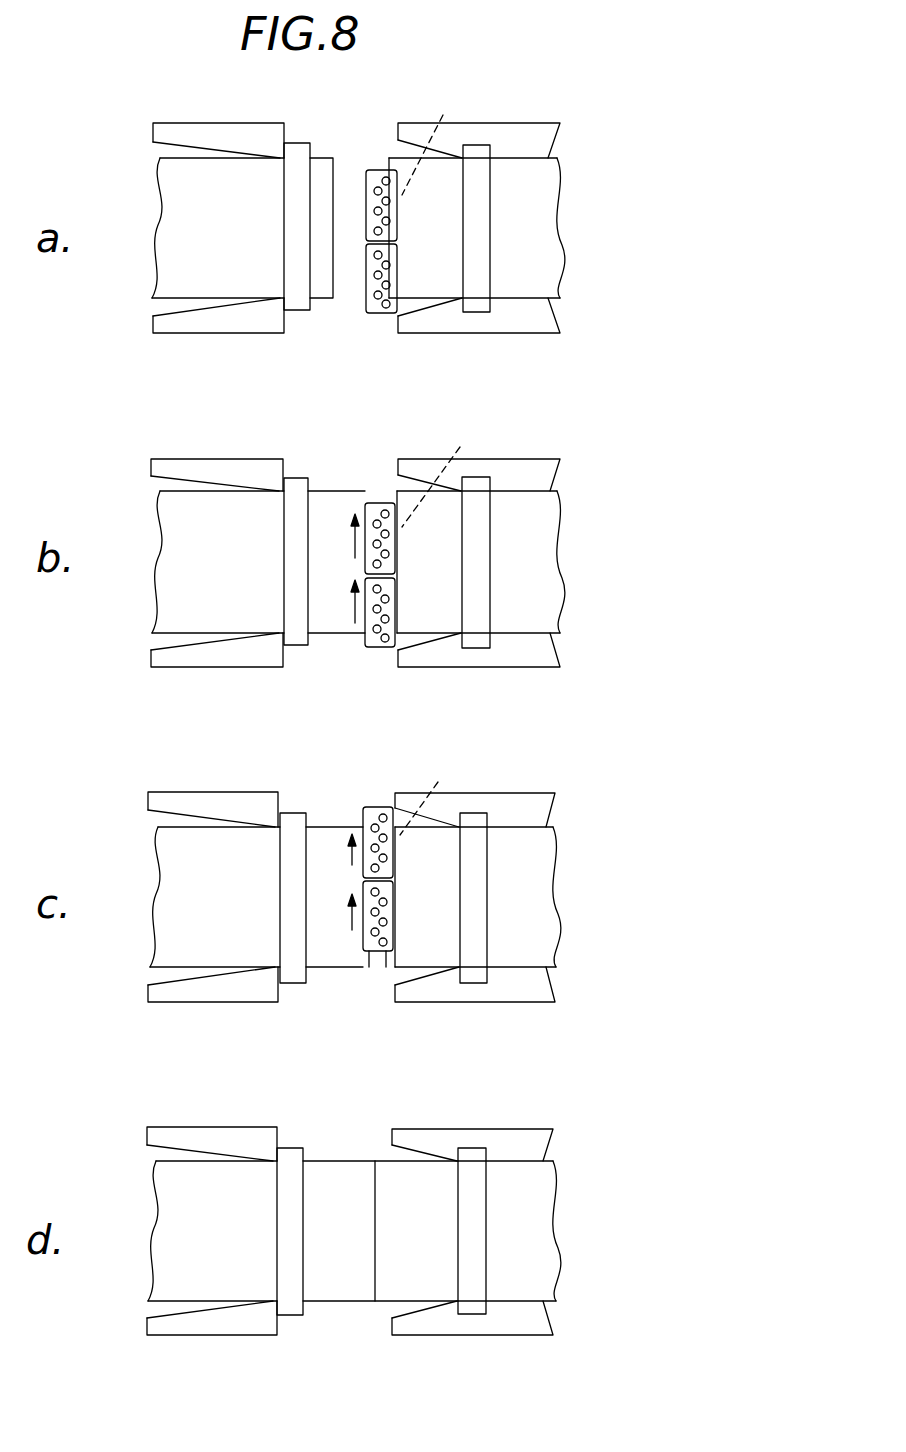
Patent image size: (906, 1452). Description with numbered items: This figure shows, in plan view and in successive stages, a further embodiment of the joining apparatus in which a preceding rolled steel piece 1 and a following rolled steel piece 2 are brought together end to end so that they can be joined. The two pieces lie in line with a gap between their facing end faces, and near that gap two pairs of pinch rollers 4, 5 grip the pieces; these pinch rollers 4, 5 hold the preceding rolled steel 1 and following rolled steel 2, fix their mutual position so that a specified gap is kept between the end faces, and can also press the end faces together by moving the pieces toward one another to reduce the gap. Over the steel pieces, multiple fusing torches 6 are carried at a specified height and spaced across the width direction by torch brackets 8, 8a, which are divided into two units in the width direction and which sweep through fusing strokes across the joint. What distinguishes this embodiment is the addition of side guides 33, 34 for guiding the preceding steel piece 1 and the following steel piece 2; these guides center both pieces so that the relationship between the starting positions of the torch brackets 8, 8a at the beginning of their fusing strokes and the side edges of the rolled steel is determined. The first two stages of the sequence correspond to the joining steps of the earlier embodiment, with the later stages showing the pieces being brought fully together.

The preceding rolled steel piece 1 is at (555, 178).
The following rolled steel piece 2 is at (165, 185).
The pinch rollers 4 is at (298, 157).
The pinch rollers 5 is at (478, 155).
The fusing torches 6 is at (444, 115).
The torch bracket 8 is at (374, 170).
The torch bracket 8a is at (383, 313).
The side guide 33 is at (270, 322).
The side guide 34 is at (540, 322).